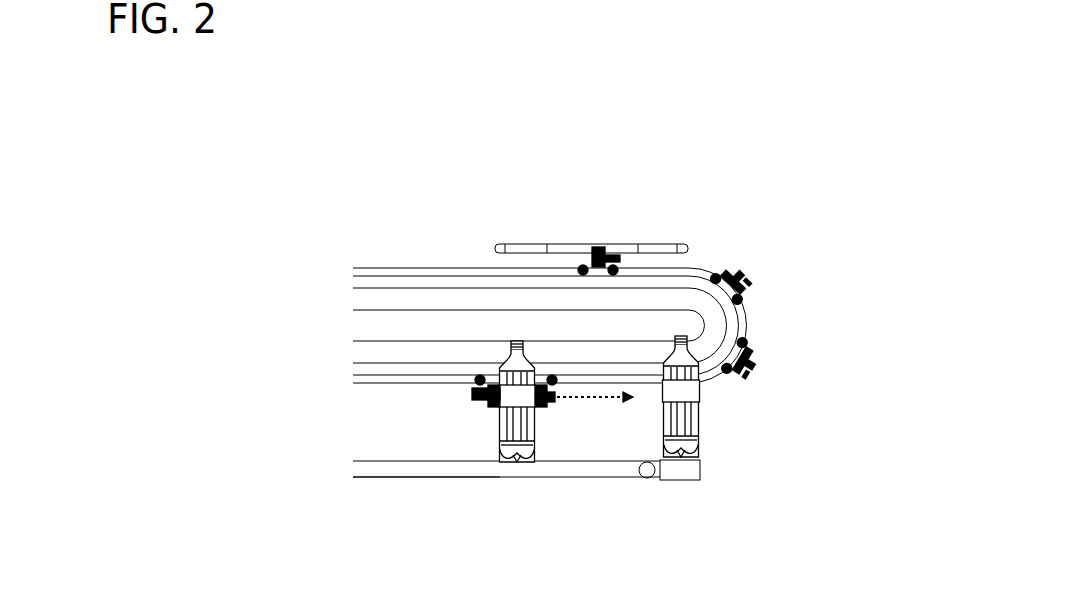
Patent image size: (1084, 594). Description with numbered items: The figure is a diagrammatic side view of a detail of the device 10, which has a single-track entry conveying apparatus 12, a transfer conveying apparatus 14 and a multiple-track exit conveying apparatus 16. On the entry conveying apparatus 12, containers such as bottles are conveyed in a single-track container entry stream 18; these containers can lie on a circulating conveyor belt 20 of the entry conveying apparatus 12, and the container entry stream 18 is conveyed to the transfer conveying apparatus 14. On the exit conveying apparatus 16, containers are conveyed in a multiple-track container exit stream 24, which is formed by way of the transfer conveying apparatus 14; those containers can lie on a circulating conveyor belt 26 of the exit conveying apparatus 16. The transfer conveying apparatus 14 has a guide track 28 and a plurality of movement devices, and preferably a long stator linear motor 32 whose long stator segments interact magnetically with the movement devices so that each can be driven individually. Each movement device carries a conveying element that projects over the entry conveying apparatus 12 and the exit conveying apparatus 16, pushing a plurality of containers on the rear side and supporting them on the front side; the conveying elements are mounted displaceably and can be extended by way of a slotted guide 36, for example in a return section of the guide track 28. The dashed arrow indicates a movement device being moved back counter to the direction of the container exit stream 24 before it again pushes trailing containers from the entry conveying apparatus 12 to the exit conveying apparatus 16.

The device 10 is at (560, 93).
The entry conveying apparatus 12 is at (715, 503).
The transfer conveying apparatus 14 is at (800, 209).
The exit conveying apparatus 16 is at (338, 466).
The container entry stream 18 is at (677, 463).
The conveyor belt 20 is at (700, 471).
The container exit stream 24 is at (507, 463).
The conveyor belt 26 is at (355, 477).
The guide track 28 is at (367, 270).
The long stator linear motor 32 is at (355, 277).
The slotted guide 36 is at (500, 248).